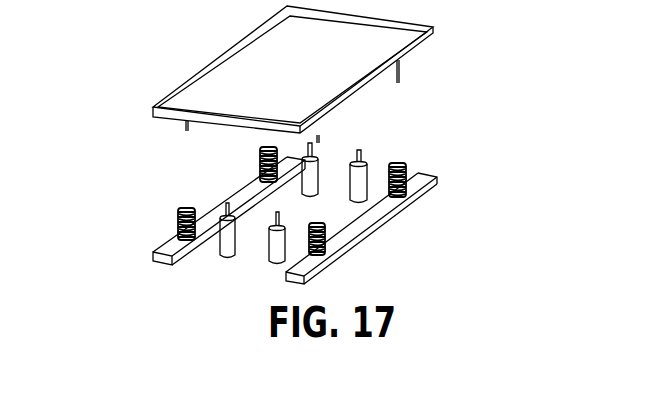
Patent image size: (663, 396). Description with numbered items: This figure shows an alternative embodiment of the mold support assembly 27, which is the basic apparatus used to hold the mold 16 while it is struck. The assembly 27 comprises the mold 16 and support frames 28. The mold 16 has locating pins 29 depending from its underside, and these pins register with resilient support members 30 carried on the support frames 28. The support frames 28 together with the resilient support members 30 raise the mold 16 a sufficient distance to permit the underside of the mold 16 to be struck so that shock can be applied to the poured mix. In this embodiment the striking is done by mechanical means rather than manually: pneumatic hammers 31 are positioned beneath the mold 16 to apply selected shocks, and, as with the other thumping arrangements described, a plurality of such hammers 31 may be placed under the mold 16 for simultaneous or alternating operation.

The mold 16 is at (191, 81).
The mold support assembly 27 is at (152, 177).
The support frame 28 is at (408, 203).
The locating pins 29 is at (398, 78).
The resilient support members 30 is at (402, 162).
The pneumatic hammers 31 is at (360, 160).